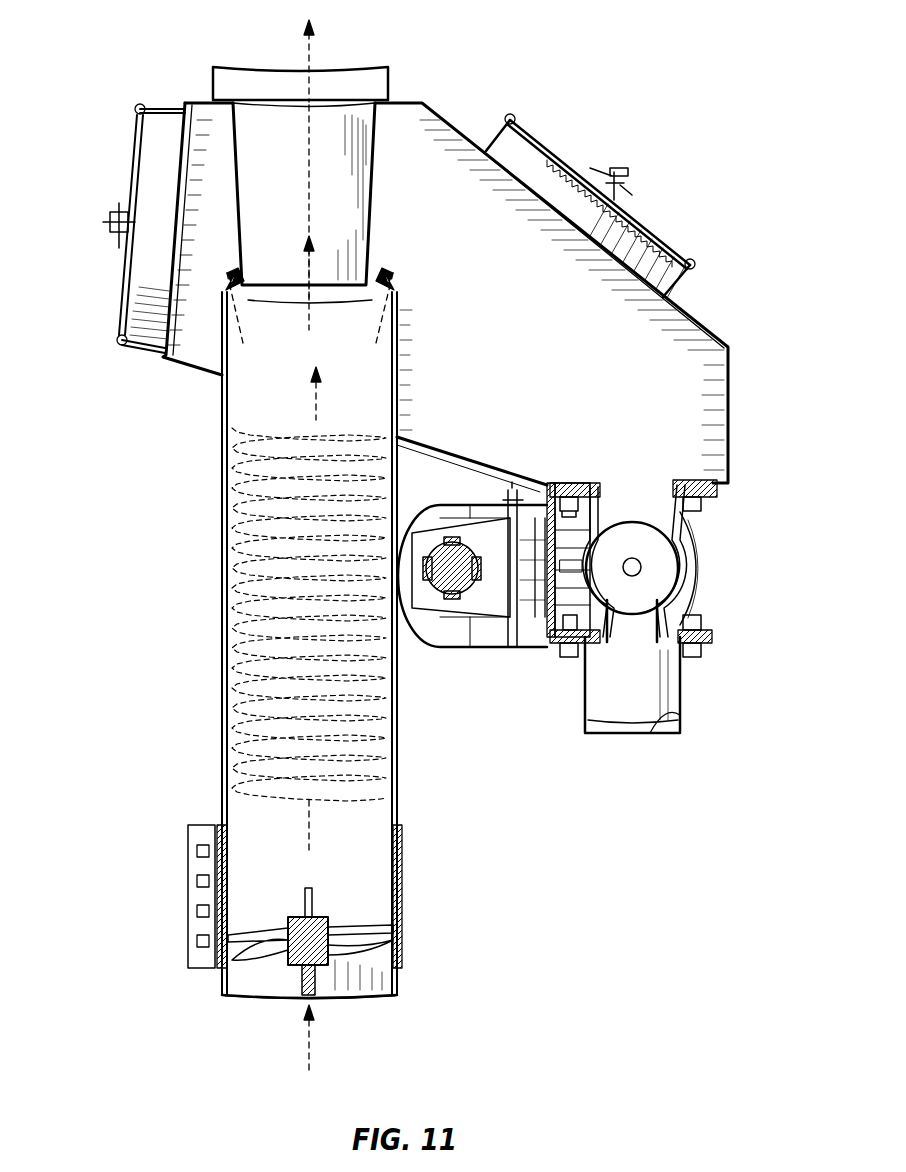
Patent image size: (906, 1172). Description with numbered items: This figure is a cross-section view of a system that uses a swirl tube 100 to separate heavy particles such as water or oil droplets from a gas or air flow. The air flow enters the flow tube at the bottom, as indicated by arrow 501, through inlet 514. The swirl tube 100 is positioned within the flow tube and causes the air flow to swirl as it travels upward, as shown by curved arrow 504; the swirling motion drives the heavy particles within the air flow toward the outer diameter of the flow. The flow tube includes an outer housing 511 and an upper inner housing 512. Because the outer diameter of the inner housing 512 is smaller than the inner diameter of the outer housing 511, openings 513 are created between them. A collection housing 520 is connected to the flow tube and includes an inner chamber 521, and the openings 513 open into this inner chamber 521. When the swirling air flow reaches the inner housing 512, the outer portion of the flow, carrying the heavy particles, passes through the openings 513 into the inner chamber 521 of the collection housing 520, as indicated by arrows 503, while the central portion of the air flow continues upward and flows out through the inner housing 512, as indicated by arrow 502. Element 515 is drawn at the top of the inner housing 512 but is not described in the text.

The swirl tube 100 is at (374, 910).
The arrow 501 is at (305, 1040).
The arrow 502 is at (312, 52).
The arrows 503 is at (240, 323).
The curved arrow 504 is at (280, 630).
The outer housing 511 is at (222, 485).
The upper inner housing 512 is at (233, 192).
The openings 513 is at (232, 270).
The inlet 514 is at (372, 1000).
The outlet 515 is at (394, 78).
The collection housing 520 is at (697, 320).
The inner chamber 521 is at (638, 389).